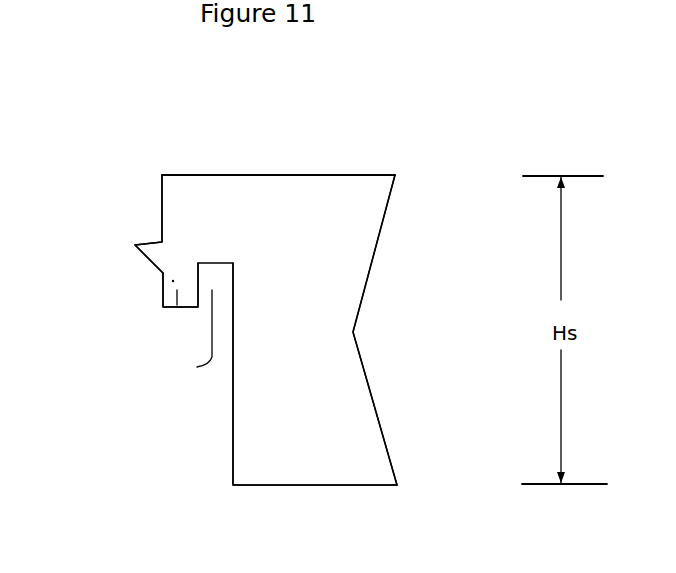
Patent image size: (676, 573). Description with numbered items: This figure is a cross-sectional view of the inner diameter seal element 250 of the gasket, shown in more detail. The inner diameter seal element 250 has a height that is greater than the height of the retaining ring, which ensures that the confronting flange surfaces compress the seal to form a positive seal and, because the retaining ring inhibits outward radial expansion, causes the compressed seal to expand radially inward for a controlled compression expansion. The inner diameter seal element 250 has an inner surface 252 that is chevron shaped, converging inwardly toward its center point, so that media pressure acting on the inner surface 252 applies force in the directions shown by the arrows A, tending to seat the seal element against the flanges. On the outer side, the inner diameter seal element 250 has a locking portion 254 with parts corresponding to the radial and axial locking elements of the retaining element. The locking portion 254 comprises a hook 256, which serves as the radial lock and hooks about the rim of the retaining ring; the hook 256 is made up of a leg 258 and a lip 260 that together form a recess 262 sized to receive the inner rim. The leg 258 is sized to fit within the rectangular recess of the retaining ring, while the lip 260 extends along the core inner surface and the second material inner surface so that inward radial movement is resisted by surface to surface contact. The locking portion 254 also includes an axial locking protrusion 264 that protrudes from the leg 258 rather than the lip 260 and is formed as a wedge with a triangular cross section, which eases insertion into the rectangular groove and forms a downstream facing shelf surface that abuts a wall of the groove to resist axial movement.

The inner diameter seal element 250 is at (310, 287).
The inner surface 252 is at (385, 223).
The locking portion 254 is at (230, 159).
The hook 256 is at (151, 294).
The leg 258 is at (205, 195).
The lip 260 is at (232, 418).
The recess 262 is at (197, 367).
The axial locking protrusion 264 is at (147, 240).
The arrows A is at (392, 360).